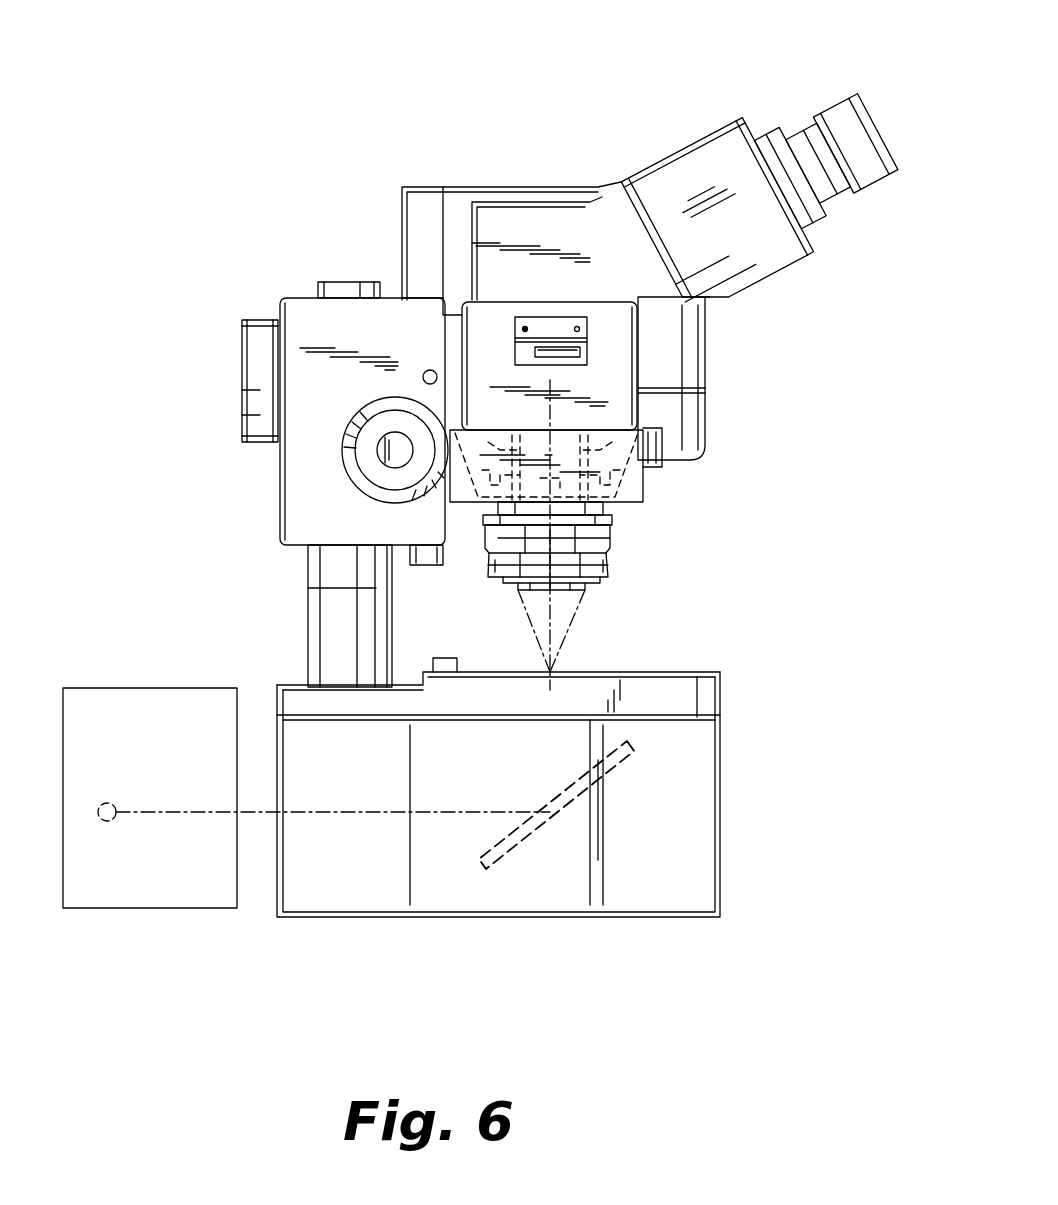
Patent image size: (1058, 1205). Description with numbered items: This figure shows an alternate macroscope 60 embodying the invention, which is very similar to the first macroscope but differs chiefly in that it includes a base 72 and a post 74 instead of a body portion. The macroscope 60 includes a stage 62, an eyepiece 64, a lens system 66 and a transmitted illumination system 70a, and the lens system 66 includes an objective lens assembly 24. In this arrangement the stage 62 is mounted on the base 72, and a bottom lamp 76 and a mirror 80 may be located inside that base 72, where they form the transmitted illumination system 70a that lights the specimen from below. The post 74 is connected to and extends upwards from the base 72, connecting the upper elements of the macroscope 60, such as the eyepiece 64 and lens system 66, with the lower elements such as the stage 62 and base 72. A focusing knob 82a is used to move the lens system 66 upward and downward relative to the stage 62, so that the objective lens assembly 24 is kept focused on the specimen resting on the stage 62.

The macroscope 60 is at (254, 153).
The eyepiece 64 is at (843, 115).
The focusing knob 82a is at (350, 468).
The post 74 is at (318, 632).
The lens system 66 is at (655, 489).
The objective lens assembly 24 is at (628, 556).
The stage 62 is at (688, 670).
The base 72 is at (720, 773).
The transmitted illumination system 70a is at (330, 935).
The mirror 80 is at (487, 893).
The bottom lamp 76 is at (107, 803).